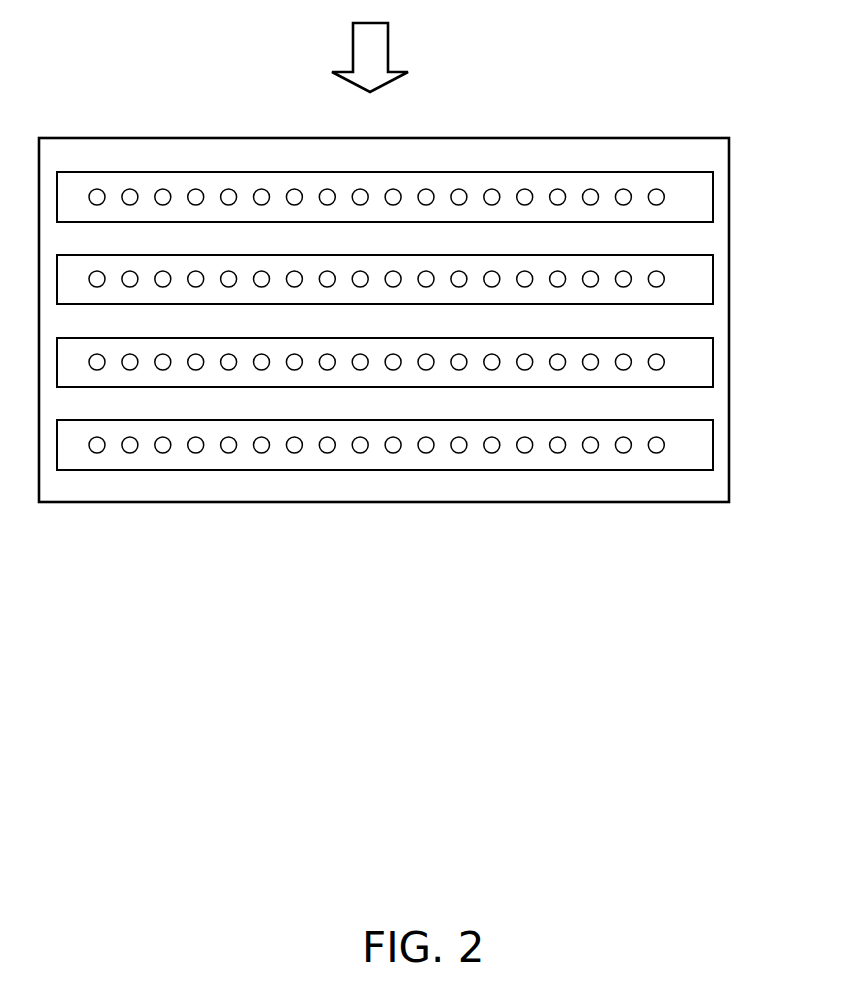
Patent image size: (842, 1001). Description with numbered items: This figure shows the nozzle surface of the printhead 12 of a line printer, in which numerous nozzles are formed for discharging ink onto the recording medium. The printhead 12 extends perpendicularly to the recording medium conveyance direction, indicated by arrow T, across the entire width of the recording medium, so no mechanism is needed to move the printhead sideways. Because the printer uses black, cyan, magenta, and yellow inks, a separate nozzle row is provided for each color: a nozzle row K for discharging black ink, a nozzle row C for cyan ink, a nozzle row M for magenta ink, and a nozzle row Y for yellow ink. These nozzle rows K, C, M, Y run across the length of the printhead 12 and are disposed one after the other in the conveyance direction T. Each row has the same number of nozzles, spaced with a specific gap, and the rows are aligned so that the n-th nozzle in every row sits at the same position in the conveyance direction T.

The printhead 12 is at (636, 138).
The recording medium conveyance direction T is at (388, 43).
The nozzle row for black ink K is at (704, 167).
The nozzle row for cyan ink C is at (704, 250).
The nozzle row for magenta ink M is at (704, 334).
The nozzle row for yellow ink Y is at (704, 417).